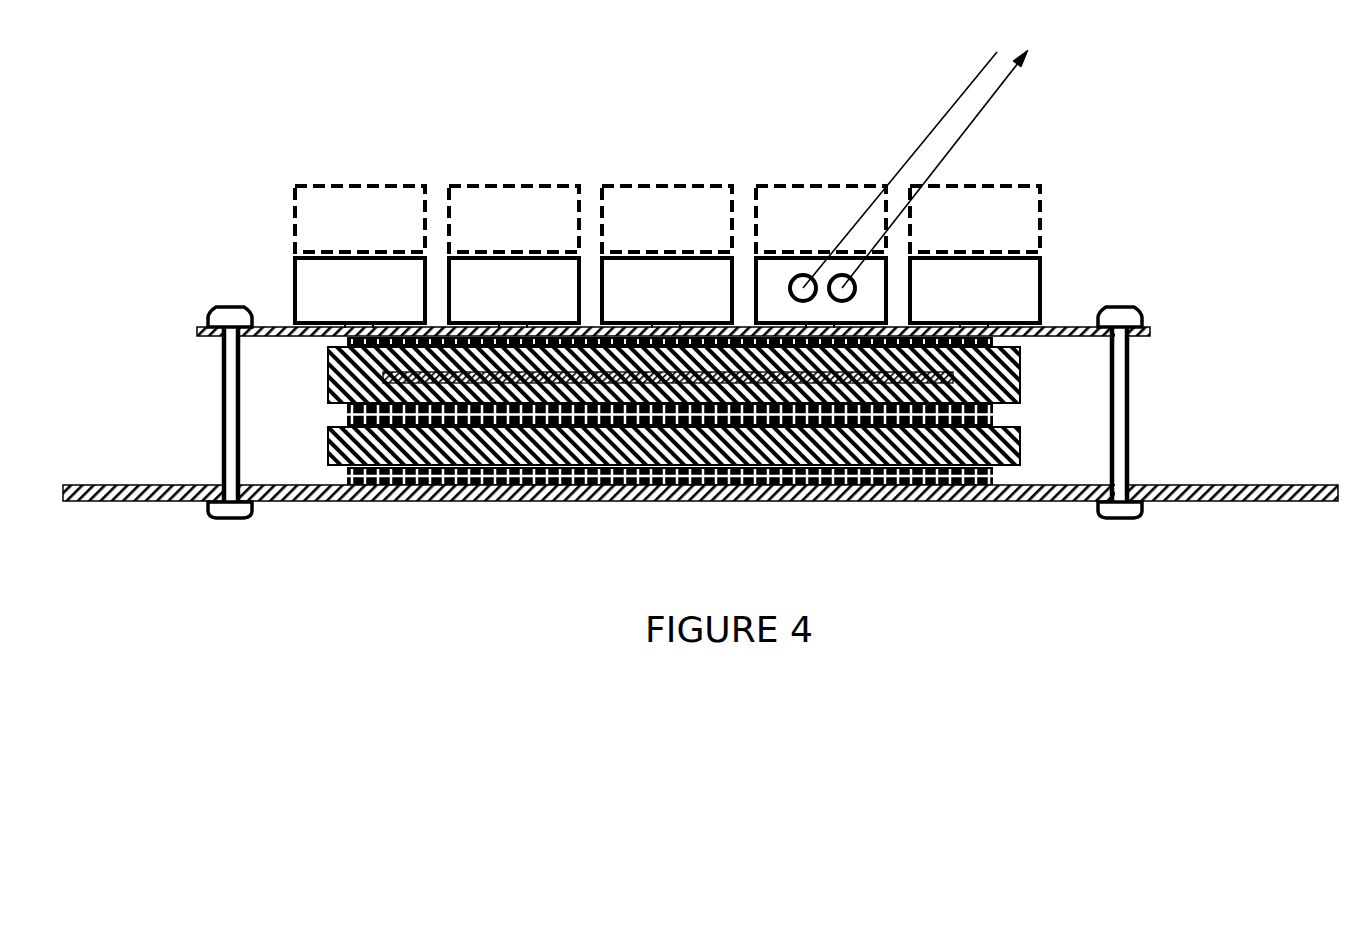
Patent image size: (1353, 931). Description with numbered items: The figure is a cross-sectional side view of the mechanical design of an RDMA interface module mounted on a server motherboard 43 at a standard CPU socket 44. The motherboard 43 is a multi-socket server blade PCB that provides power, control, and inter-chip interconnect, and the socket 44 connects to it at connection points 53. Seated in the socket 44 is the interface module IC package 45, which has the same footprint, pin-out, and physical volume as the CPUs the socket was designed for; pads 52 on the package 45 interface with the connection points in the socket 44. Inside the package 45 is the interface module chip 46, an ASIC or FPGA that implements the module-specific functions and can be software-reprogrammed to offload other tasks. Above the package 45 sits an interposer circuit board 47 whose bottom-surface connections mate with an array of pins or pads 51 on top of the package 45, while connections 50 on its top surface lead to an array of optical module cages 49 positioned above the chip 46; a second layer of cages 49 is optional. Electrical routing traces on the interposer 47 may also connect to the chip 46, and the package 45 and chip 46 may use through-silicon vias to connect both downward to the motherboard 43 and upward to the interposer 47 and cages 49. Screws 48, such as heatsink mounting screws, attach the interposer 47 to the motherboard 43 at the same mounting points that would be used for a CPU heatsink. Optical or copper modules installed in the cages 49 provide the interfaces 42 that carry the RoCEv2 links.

The interfaces 42 is at (960, 137).
The motherboard 43 is at (882, 502).
The socket 44 is at (1022, 447).
The interface module IC package 45 is at (953, 378).
The interface module chip 46 is at (1022, 348).
The interposer circuit board 47 is at (1062, 327).
The screws 48 is at (224, 394).
The optical module cages 49 is at (295, 285).
The connections 50 is at (967, 326).
The connection points 51 is at (347, 342).
The pads 52 is at (347, 418).
The connection points 53 is at (347, 478).